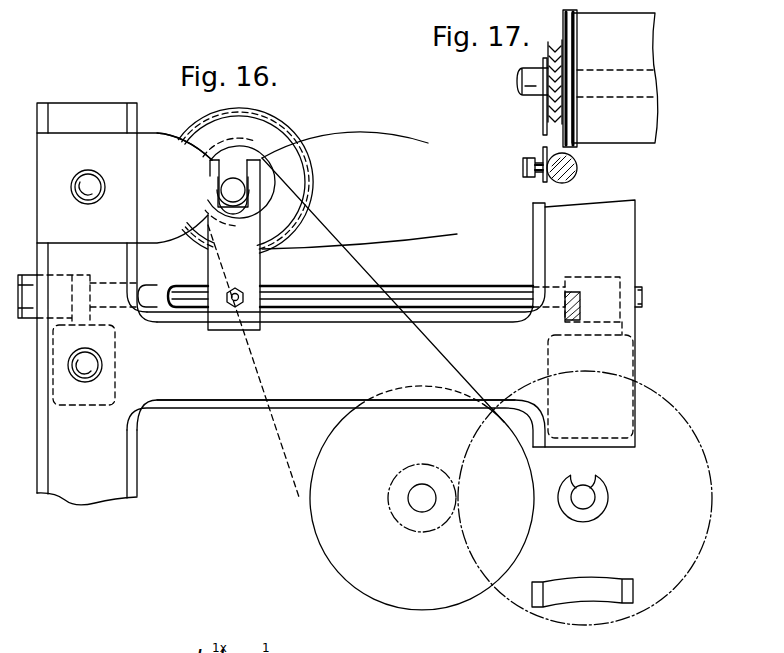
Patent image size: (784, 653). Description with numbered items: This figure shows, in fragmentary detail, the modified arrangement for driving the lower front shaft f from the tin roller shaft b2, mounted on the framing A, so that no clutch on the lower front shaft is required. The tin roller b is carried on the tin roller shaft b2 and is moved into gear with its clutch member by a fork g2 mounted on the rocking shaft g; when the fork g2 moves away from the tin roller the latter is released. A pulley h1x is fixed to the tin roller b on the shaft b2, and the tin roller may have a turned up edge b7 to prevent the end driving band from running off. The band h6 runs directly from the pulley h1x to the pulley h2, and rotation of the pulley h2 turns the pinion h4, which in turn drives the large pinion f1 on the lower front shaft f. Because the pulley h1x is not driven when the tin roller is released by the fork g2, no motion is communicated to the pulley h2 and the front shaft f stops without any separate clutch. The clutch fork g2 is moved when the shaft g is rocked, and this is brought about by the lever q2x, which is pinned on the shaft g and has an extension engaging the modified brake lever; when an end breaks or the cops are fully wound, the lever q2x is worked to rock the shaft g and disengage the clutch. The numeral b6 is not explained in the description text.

In FIG. 16, the framing A is at (110, 452).
In FIG. 16, the tin roller b is at (292, 181).
In FIG. 17, the tin roller b is at (655, 80).
In FIG. 16, the tin roller shaft b2 is at (228, 192).
In FIG. 17, the tin roller shaft b2 is at (525, 70).
In FIG. 16, the bracket arm b6 is at (204, 151).
In FIG. 17, the turned up edge b7 is at (573, 13).
In FIG. 16, the pulley h1x is at (266, 160).
In FIG. 17, the pulley h1x is at (578, 112).
In FIG. 16, the shaft g is at (428, 262).
In FIG. 17, the shaft g is at (577, 167).
In FIG. 16, the fork g2 is at (242, 274).
In FIG. 17, the fork g2 is at (524, 101).
In FIG. 16, the lever q2x is at (579, 305).
In FIG. 16, the band h6 is at (283, 436).
In FIG. 16, the pulley h2 is at (365, 597).
In FIG. 16, the pinion h4 is at (395, 470).
In FIG. 16, the lower front shaft f is at (583, 500).
In FIG. 16, the large pinion f1 is at (708, 506).